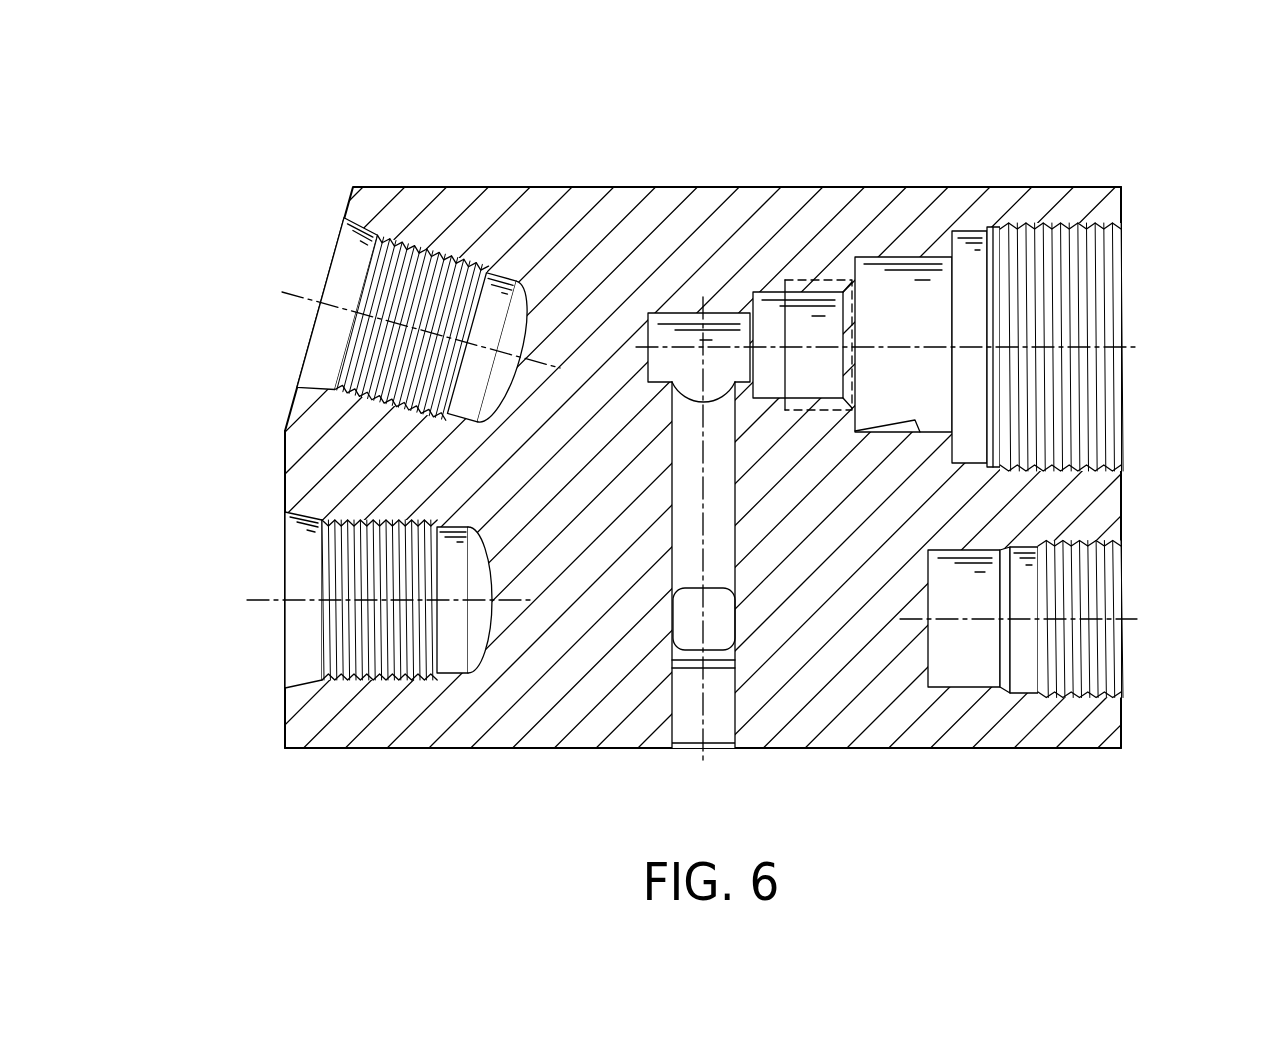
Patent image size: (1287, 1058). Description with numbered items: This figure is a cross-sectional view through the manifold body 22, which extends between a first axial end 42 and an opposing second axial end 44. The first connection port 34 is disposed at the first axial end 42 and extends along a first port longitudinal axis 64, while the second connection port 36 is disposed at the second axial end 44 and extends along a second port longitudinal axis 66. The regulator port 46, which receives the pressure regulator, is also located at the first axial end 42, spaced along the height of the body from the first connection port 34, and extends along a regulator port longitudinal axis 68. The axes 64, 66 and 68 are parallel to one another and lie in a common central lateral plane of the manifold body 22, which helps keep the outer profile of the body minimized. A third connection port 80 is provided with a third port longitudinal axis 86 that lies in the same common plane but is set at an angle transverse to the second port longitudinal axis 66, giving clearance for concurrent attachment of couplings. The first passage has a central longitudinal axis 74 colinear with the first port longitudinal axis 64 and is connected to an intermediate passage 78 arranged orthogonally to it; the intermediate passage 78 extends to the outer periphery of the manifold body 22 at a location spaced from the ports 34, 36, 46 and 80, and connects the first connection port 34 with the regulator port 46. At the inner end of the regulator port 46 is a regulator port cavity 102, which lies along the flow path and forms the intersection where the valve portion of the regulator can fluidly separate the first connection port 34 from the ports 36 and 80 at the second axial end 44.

The manifold body 22 is at (1093, 125).
The first axial end 42 is at (1137, 718).
The second axial end 44 is at (257, 725).
The third connection port 80 is at (327, 257).
The third port longitudinal axis 86 is at (287, 292).
The second connection port 36 is at (285, 555).
The second port longitudinal axis 66 is at (263, 607).
The intermediate passage 78 is at (664, 703).
The central longitudinal axis of the first passage 74 is at (713, 633).
The regulator port cavity 102 is at (897, 290).
The regulator port 46 is at (1122, 258).
The regulator port longitudinal axis 68 is at (1133, 345).
The first connection port 34 is at (1123, 555).
The first port longitudinal axis 64 is at (1127, 618).